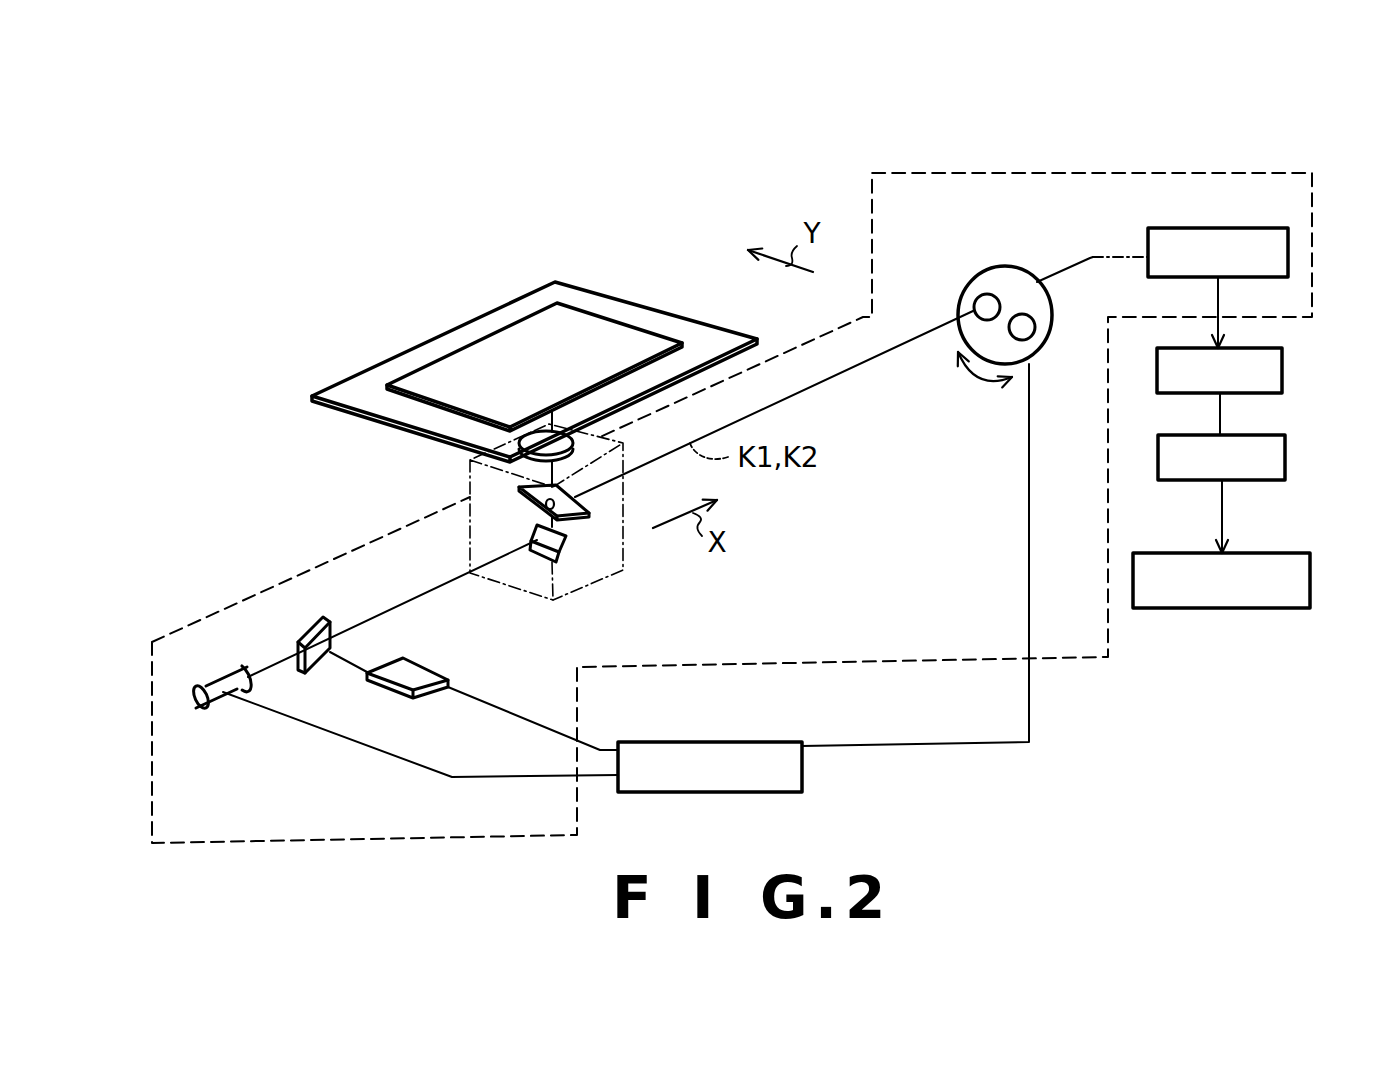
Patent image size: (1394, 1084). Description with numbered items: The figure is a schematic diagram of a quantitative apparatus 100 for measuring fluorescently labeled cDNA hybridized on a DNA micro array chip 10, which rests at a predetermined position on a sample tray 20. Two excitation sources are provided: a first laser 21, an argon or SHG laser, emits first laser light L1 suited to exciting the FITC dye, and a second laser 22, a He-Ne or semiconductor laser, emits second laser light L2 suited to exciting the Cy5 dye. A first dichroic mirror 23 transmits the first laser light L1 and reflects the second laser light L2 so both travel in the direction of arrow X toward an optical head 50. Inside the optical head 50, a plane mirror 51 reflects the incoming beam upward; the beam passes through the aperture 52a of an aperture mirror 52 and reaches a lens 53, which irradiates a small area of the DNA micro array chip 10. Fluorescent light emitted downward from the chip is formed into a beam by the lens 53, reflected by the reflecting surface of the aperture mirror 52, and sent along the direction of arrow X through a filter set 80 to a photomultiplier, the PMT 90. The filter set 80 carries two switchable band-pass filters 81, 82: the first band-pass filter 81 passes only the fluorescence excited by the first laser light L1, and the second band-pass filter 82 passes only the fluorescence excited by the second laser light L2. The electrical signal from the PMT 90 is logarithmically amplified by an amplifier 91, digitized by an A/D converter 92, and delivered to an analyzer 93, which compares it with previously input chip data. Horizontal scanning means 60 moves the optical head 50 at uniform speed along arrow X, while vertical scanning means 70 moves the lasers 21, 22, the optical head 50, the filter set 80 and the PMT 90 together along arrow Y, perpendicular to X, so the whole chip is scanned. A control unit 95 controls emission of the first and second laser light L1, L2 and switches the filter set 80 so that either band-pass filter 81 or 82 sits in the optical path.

The quantitative apparatus 100 is at (503, 183).
The DNA micro array chip 10 is at (613, 327).
The sample tray 20 is at (688, 333).
The first laser 21 is at (212, 680).
The second laser 22 is at (403, 700).
The first dichroic mirror 23 is at (303, 634).
The optical head 50 is at (470, 472).
The plane mirror 51 is at (530, 544).
The aperture mirror 52 is at (593, 507).
The aperture 52a is at (545, 505).
The lens 53 is at (592, 449).
The horizontal scanning means 60 is at (623, 572).
The vertical scanning means 70 is at (852, 322).
The filter set 80 is at (1013, 268).
The first band-pass filter 81 is at (978, 300).
The second band-pass filter 82 is at (1030, 332).
The photomultiplier (PMT) 90 is at (1182, 228).
The logarithmic amplifier 91 is at (1282, 372).
The A/D converter 92 is at (1285, 465).
The analyzer 93 is at (1310, 582).
The control unit 95 is at (740, 792).
The first laser light L1 is at (275, 668).
The second laser light L2 is at (350, 660).